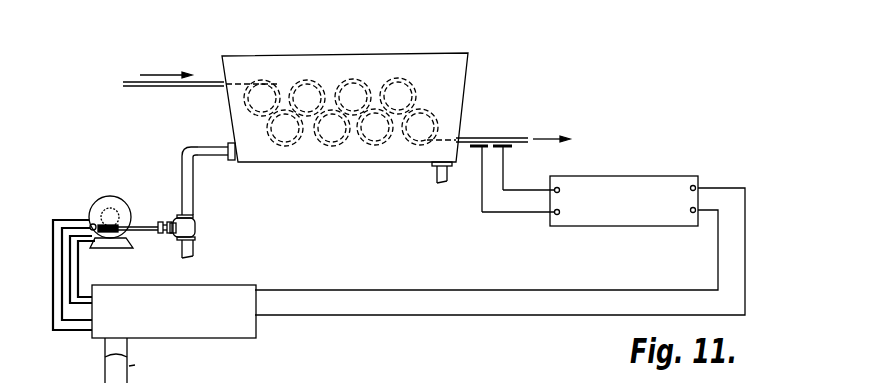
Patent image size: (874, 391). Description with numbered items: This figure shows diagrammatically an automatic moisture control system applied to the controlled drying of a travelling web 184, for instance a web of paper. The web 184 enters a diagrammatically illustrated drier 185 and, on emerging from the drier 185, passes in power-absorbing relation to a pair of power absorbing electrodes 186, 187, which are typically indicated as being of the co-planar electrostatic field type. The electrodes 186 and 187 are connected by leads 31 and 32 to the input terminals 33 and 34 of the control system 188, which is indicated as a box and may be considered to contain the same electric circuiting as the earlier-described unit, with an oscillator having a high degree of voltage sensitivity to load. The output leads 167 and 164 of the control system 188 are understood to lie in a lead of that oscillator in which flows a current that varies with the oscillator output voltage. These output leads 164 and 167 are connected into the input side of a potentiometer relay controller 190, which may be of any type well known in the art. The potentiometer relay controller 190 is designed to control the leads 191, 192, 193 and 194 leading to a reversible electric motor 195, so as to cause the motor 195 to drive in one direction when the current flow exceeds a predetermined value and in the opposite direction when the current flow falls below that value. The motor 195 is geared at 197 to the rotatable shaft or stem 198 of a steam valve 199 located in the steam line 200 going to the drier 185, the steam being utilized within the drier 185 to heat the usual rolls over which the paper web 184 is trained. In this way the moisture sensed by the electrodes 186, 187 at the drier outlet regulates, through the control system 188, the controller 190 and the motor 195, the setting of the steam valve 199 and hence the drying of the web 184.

The travelling web 184 is at (124, 83).
The drier 185 is at (386, 38).
The power absorbing electrode 186 is at (476, 149).
The power absorbing electrode 187 is at (510, 148).
The control system 188 is at (621, 170).
The lead 31 is at (478, 208).
The lead 32 is at (512, 196).
The input terminal 33 is at (560, 190).
The input terminal 34 is at (560, 212).
The output lead 167 is at (706, 184).
The output lead 164 is at (708, 214).
The potentiometer relay controller 190 is at (250, 281).
The lead 191 is at (77, 262).
The lead 192 is at (74, 277).
The lead 193 is at (54, 259).
The lead 194 is at (54, 283).
The reversible electric motor 195 is at (100, 197).
The gearing 197 is at (130, 206).
The rotatable shaft or stem 198 is at (160, 222).
The steam valve 199 is at (196, 227).
The steam line 200 is at (195, 190).